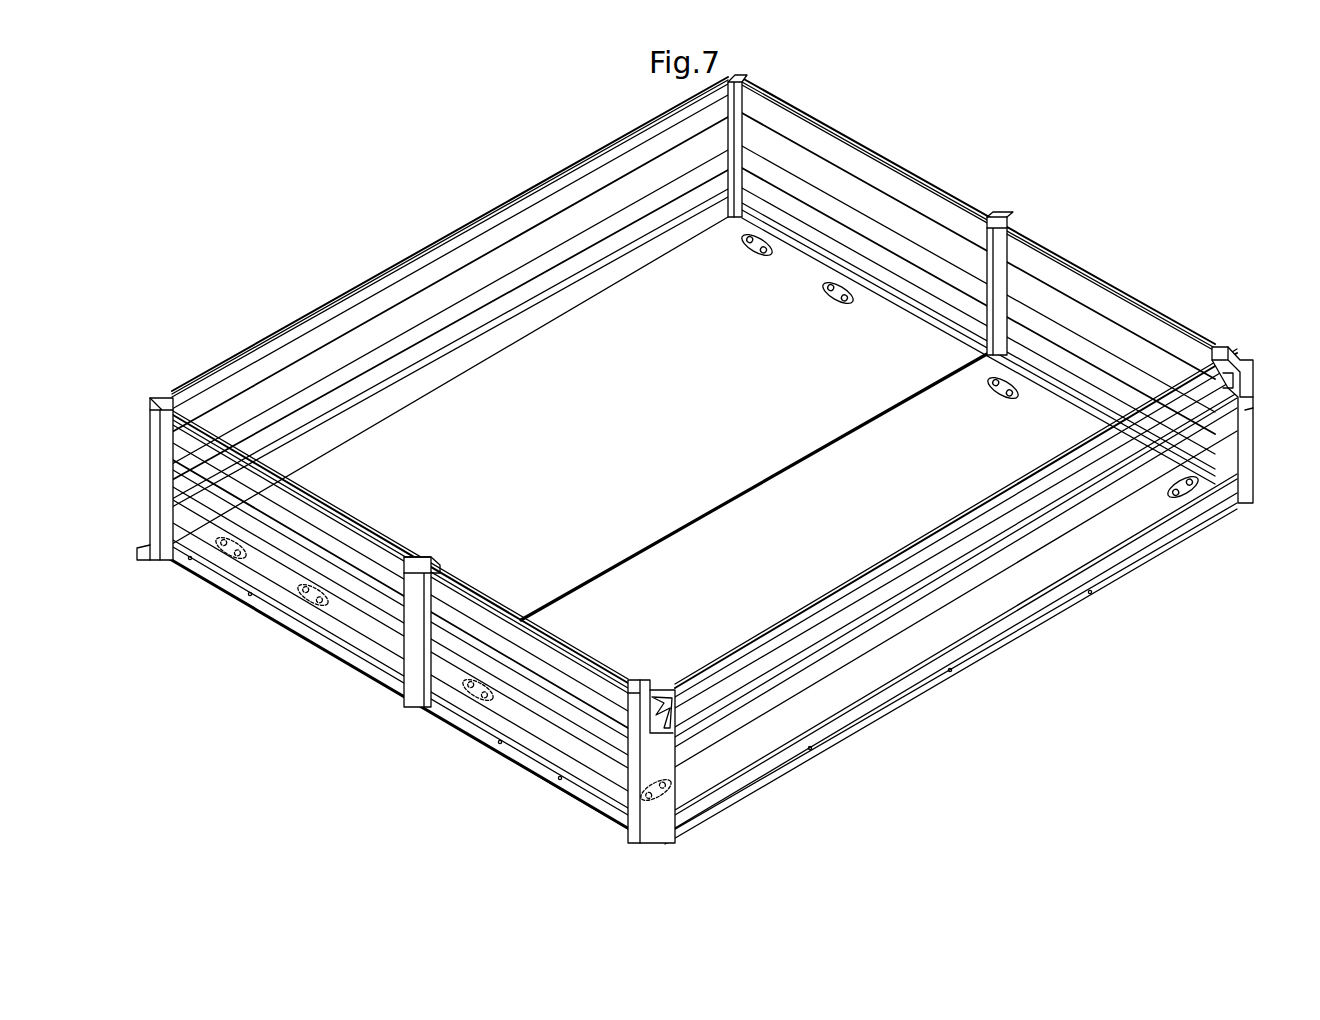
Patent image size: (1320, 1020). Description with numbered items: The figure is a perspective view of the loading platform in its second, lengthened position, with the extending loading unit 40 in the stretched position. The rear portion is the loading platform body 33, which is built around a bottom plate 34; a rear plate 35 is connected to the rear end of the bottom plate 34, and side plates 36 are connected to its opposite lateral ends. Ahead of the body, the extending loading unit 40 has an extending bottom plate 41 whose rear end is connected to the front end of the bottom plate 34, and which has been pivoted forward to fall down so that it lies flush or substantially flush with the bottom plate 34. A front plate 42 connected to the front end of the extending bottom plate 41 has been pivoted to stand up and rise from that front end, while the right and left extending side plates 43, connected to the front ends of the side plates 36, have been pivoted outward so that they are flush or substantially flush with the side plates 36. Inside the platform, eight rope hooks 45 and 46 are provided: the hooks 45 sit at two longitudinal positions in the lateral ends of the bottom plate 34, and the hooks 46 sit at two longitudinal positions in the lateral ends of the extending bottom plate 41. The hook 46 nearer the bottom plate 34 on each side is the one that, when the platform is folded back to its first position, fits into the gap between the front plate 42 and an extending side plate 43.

The loading platform body 33 is at (1084, 269).
The bottom plate 34 is at (718, 580).
The rear plate 35 is at (996, 608).
The side plates 36 is at (1176, 342).
The extending loading unit 40 is at (939, 186).
The extending bottom plate 41 is at (517, 482).
The front plate 42 is at (422, 262).
The extending side plates 43 is at (850, 162).
The rope hooks 45 is at (746, 247).
The rope hooks 46 is at (828, 300).